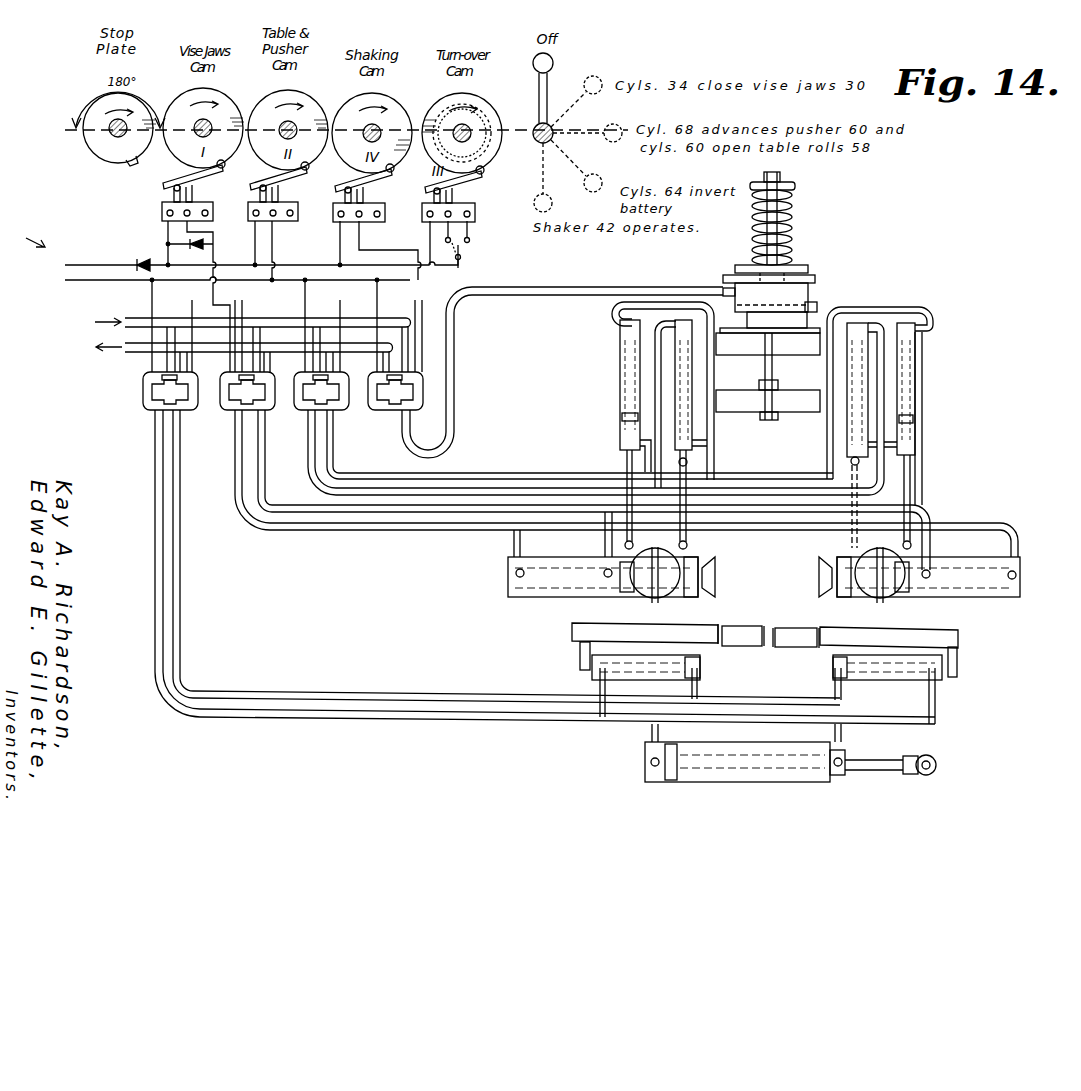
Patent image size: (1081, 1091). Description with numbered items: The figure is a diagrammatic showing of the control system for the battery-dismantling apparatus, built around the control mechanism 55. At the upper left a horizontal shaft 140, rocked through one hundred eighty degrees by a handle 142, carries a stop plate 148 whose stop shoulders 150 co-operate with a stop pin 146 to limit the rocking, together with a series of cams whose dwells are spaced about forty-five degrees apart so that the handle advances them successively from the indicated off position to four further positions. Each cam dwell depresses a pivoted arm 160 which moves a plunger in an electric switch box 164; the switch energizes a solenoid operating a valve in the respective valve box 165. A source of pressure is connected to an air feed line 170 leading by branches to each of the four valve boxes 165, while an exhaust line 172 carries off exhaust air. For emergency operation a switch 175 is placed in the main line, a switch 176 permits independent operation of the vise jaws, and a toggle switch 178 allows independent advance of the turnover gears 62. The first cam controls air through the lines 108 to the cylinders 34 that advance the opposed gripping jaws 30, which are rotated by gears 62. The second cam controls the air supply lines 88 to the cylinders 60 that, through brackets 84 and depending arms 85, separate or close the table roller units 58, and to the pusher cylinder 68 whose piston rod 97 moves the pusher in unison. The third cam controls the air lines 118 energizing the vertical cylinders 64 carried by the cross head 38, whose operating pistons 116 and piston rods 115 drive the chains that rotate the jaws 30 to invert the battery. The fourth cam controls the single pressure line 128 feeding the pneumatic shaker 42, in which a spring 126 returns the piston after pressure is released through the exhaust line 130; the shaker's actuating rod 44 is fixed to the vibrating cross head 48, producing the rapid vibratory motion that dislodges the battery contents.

The rotary gripping jaws 30 is at (717, 562).
The pneumatic cylinders 34 is at (552, 598).
The cross head 38 is at (728, 348).
The pneumatic shaker 42 is at (803, 206).
The actuating rod 44 is at (774, 370).
The vibrating cross head 48 is at (744, 414).
The control mechanism 55 is at (24, 233).
The table roller units 58 is at (738, 646).
The pneumatic cylinders 60 is at (596, 660).
The gears 62 is at (657, 600).
The vertical pneumatic cylinders 64 is at (678, 368).
The pusher cylinder 68 is at (715, 783).
The brackets 84 is at (960, 638).
The depending arms 85 is at (960, 658).
The air supply lines 88 is at (322, 716).
The piston rod 97 is at (870, 776).
The air lines 108 is at (386, 522).
The piston rods 115 is at (911, 468).
The operating pistons 116 is at (916, 418).
The air lines 118 is at (480, 490).
The spring 126 is at (796, 224).
The pressure line 128 is at (575, 287).
The exhaust line 130 is at (818, 303).
The horizontal shaft 140 is at (114, 138).
The handle 142 is at (556, 60).
The stop pin 146 is at (98, 100).
The stop plate 148 is at (86, 140).
The stop shoulders 150 is at (130, 165).
The pivoted arm 160 is at (200, 176).
The electric switch box 164 is at (162, 208).
The valve box 165 is at (142, 396).
The air feed line 170 is at (146, 312).
The exhaust line 172 is at (112, 356).
The switch 175 is at (134, 258).
The switch 176 is at (206, 246).
The toggle switch 178 is at (461, 256).